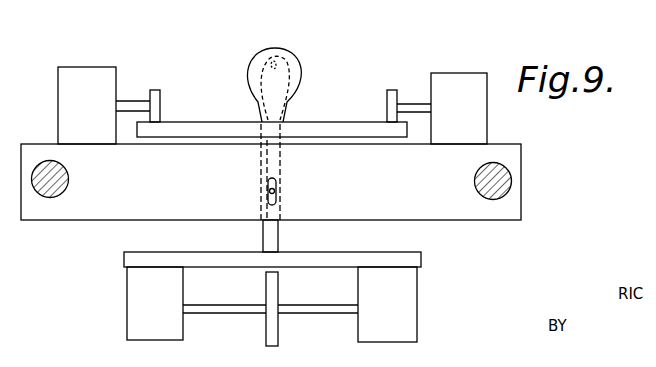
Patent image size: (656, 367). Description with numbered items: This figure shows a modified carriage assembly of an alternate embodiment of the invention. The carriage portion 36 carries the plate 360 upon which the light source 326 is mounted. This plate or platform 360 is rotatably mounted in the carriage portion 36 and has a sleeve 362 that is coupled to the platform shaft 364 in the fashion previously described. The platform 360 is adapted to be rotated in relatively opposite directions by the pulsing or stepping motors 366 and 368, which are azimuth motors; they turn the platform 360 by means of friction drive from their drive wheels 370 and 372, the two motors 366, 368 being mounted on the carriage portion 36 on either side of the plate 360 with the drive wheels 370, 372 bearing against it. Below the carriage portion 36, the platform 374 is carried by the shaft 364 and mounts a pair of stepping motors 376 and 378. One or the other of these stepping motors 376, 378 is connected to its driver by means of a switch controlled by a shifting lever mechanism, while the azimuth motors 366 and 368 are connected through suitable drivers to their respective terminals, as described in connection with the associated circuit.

The carriage portion 36 is at (521, 156).
The light source 326 is at (298, 58).
The plate 360 is at (322, 124).
The sleeve 362 is at (278, 176).
The platform shaft 364 is at (282, 236).
The stepping motor 366 is at (84, 67).
The stepping motor 368 is at (460, 73).
The drive wheel 370 is at (153, 90).
The drive wheel 372 is at (392, 90).
The platform 374 is at (413, 256).
The stepping motor 376 is at (127, 300).
The stepping motor 378 is at (417, 308).